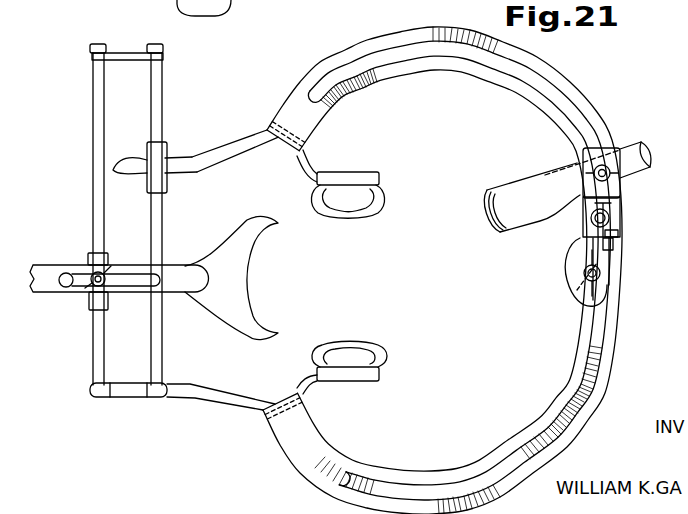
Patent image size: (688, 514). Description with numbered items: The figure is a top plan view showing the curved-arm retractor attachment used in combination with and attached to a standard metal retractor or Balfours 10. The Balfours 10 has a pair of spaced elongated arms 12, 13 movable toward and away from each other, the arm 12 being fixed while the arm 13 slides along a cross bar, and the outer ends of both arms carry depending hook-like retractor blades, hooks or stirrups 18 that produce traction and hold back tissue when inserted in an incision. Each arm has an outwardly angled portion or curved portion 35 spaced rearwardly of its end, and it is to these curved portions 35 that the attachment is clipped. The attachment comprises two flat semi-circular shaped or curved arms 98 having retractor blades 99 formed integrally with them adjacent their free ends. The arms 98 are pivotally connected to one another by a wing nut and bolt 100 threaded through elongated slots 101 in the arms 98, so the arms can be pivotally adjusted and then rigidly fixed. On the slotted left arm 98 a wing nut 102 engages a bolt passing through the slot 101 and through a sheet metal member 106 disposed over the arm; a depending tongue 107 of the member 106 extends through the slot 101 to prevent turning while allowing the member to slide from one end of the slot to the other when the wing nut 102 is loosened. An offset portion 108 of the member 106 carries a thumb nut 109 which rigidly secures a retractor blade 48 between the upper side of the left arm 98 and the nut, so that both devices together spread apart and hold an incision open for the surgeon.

The standard metal retractor or Balfours 10 is at (203, 150).
The arm 12 is at (192, 386).
The arm 13 is at (180, 172).
The retractor blades, hooks or stirrups 18 is at (366, 214).
The outwardly angled portion or curved portion 35 is at (248, 153).
The retractor blade 48 is at (522, 193).
The flat semi-circular shaped or curved arms 98 is at (543, 64).
The retractor blades 99 is at (296, 162).
The wing nut and bolt 100 is at (615, 285).
The elongated slots 101 is at (560, 100).
The wing nut 102 is at (620, 231).
The sheet metal member 106 is at (620, 207).
The depending tongue 107 is at (614, 244).
The offset portion 108 is at (617, 148).
The thumb nut 109 is at (622, 178).